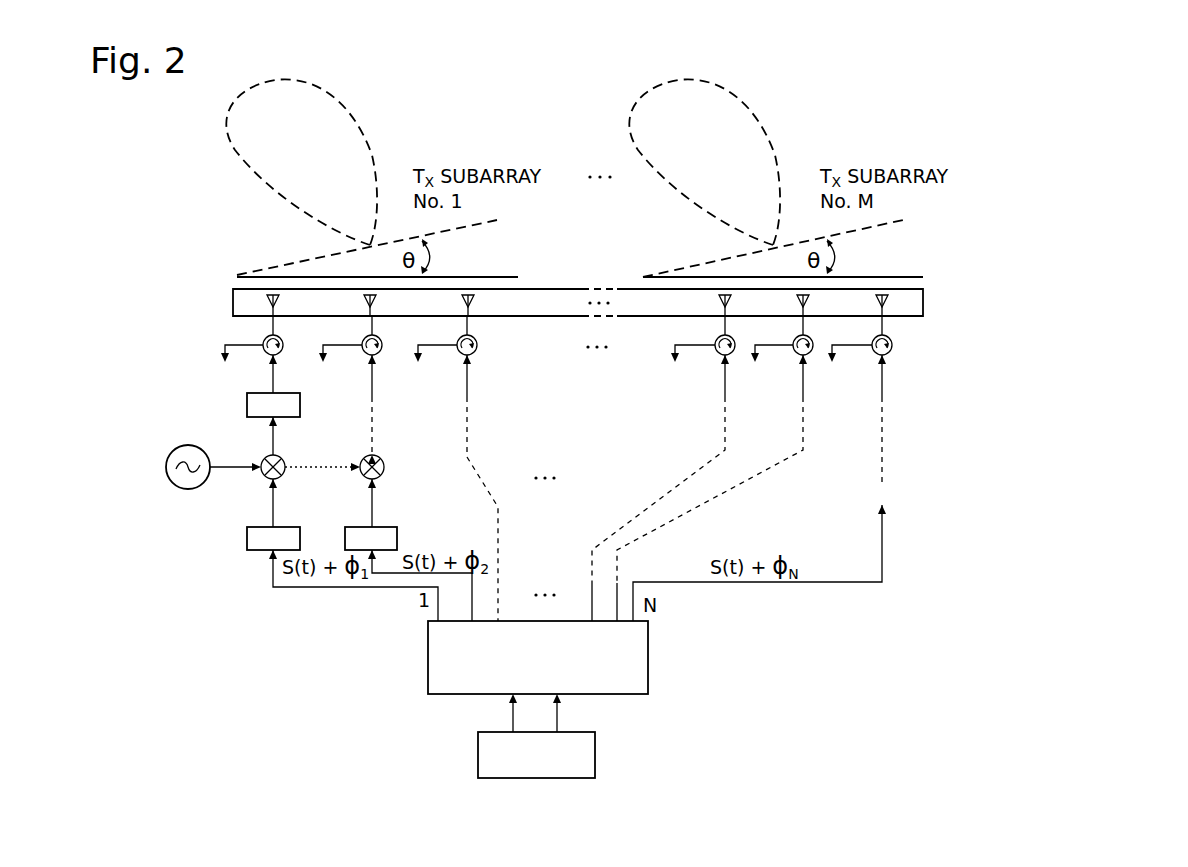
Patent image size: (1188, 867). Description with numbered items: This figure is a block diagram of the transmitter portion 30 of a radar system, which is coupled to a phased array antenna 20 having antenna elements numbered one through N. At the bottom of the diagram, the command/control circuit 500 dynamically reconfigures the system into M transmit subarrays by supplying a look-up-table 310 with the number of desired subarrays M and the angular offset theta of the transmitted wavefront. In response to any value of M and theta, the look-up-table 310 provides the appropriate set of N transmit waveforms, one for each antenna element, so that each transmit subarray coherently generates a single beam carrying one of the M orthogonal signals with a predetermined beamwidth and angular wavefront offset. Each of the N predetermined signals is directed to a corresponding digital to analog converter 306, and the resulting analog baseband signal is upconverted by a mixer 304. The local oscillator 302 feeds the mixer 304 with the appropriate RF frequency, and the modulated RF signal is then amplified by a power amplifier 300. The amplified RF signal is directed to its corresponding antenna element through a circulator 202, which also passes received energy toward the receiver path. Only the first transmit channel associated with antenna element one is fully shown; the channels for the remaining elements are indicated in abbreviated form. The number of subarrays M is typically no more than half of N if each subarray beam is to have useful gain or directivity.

The transmitter portion 30 is at (1119, 165).
The phased array antenna 20 is at (923, 301).
The circulator 202 is at (282, 341).
The power amplifier 300 is at (247, 407).
The local oscillator 302 is at (166, 467).
The mixer 304 is at (360, 461).
The digital to analog converter 306 is at (247, 540).
The look-up-table 310 is at (648, 661).
The command/control circuit 500 is at (595, 755).